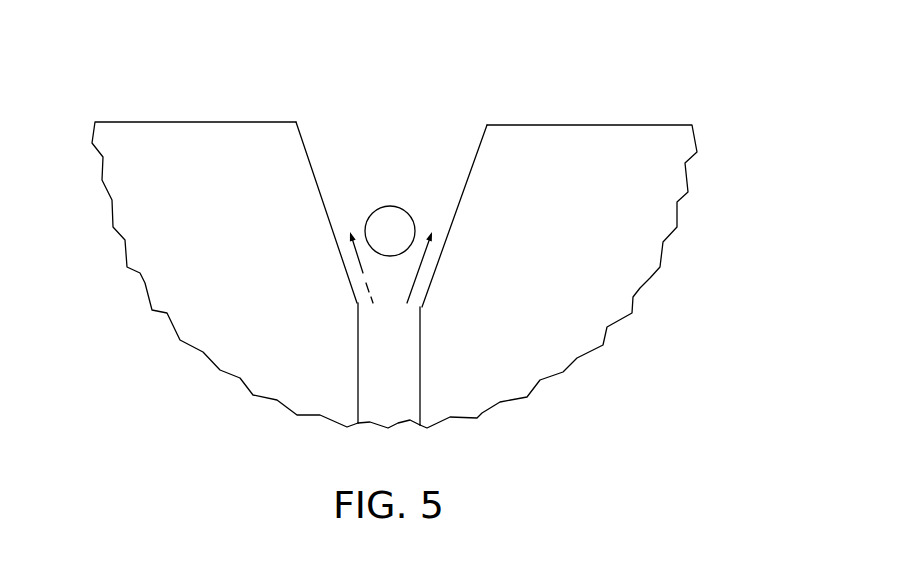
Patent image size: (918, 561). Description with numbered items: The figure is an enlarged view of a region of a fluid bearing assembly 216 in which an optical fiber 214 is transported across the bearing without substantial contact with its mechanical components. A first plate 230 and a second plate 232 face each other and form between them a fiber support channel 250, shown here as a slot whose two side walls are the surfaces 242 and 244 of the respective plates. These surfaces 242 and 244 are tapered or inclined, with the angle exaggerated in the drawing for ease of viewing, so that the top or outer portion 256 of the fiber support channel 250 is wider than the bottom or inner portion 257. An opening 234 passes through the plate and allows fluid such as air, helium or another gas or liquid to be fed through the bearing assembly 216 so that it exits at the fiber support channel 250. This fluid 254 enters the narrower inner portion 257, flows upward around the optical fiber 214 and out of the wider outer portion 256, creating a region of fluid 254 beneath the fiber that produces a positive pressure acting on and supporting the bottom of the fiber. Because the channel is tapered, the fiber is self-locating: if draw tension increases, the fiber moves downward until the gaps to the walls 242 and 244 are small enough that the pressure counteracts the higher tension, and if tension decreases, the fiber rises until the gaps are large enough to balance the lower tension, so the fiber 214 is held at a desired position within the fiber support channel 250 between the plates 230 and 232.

The fluid bearing assembly 216 is at (640, 88).
The fiber support channel 250 is at (416, 99).
The outer portion of fiber support channel 256 is at (387, 148).
The surface 242 is at (330, 128).
The surface 244 is at (477, 150).
The optical fiber 214 is at (392, 205).
The first plate 230 is at (127, 231).
The second plate 232 is at (625, 299).
The fluid 254 is at (340, 263).
The inner portion of fiber support channel 257 is at (390, 305).
The opening 234 is at (360, 307).